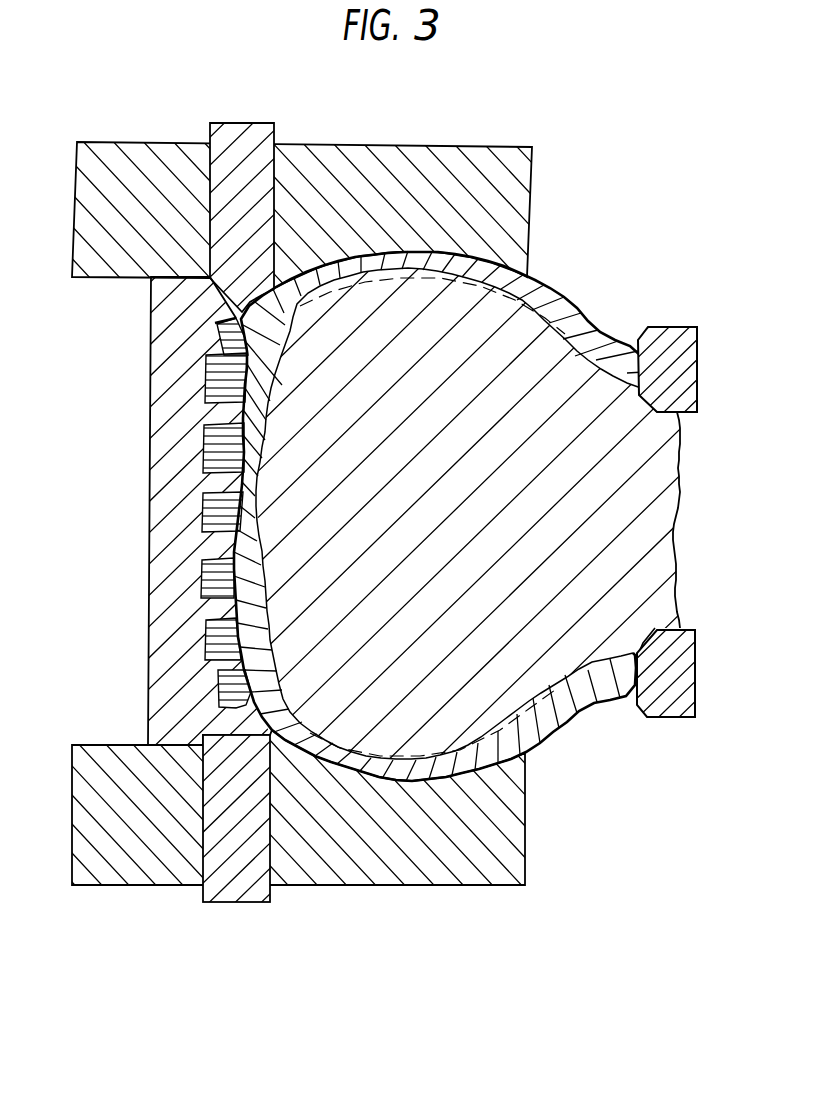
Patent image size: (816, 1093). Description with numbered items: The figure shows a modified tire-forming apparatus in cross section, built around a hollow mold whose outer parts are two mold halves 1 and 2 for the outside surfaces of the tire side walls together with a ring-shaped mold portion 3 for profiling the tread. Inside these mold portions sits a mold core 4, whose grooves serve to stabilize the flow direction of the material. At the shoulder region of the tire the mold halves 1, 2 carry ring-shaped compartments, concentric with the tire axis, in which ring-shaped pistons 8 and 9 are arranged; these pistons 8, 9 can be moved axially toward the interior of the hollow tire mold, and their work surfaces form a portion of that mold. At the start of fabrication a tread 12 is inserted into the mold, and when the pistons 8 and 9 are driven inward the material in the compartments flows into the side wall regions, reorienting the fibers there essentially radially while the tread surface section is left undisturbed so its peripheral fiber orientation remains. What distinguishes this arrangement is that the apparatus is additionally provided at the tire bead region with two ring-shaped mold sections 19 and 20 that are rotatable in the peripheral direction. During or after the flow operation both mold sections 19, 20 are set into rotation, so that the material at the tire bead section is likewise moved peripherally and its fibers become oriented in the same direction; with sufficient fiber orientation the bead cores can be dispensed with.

The mold half 1 is at (147, 856).
The mold half 2 is at (136, 157).
The ring-shaped mold portion 3 is at (165, 526).
The mold core 4 is at (488, 660).
The ring-shaped piston 8 is at (228, 879).
The ring-shaped piston 9 is at (245, 148).
The tread 12 is at (215, 571).
The ring-shaped mold section 19 is at (668, 695).
The ring-shaped mold section 20 is at (670, 350).